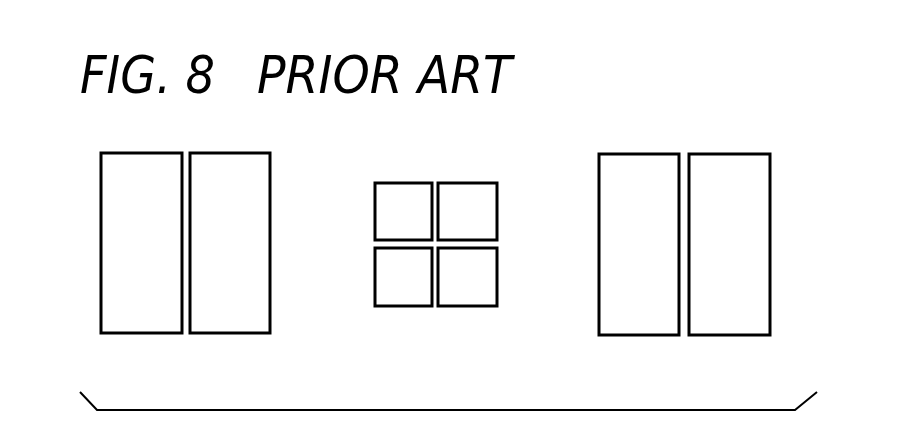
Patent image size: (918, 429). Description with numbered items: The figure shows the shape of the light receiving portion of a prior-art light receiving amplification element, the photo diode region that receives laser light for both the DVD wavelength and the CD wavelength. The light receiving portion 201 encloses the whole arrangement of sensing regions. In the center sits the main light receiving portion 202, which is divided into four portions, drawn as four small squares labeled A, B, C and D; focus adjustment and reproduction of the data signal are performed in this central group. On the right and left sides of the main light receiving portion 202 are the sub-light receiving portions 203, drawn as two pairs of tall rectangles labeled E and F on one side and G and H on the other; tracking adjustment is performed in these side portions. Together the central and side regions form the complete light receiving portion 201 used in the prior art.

The light receiving portion 201 is at (637, 108).
The main light receiving portion 202 is at (432, 315).
The sub-light receiving portions 203 is at (182, 342).